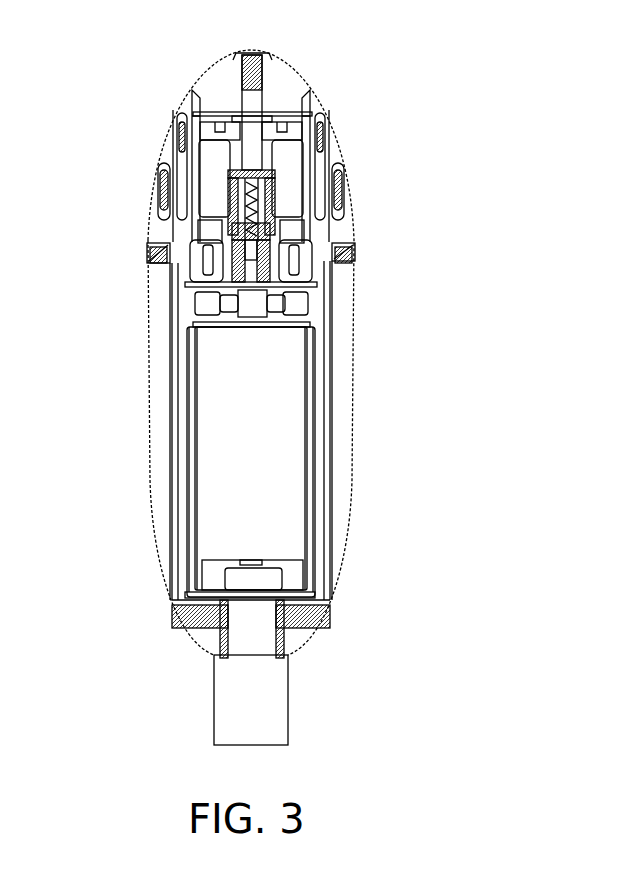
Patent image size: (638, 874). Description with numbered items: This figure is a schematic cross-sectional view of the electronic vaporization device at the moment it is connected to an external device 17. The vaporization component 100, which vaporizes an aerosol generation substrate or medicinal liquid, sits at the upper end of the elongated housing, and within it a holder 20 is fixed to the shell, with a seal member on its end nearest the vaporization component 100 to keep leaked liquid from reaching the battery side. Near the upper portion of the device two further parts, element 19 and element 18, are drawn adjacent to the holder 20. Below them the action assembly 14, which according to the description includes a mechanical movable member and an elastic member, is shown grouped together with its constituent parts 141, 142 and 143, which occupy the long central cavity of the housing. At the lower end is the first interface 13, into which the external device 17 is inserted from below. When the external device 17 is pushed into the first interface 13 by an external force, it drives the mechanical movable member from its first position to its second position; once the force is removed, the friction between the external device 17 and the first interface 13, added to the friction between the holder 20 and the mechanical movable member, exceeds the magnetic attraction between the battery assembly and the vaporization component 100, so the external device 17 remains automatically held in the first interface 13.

The vaporization component 100 is at (183, 98).
The valve seat 19 is at (225, 262).
The valve assembly 18 is at (233, 303).
The holder 20 is at (183, 366).
The action assembly 14 is at (167, 463).
The outer sleeve 141 is at (193, 463).
The inner sleeve 142 is at (308, 503).
The bottom cap 143 is at (247, 600).
The first interface 13 is at (217, 612).
The external device 17 is at (230, 686).